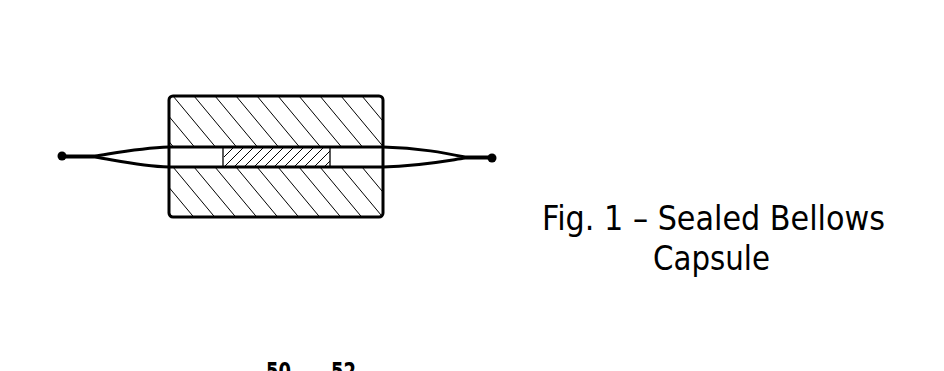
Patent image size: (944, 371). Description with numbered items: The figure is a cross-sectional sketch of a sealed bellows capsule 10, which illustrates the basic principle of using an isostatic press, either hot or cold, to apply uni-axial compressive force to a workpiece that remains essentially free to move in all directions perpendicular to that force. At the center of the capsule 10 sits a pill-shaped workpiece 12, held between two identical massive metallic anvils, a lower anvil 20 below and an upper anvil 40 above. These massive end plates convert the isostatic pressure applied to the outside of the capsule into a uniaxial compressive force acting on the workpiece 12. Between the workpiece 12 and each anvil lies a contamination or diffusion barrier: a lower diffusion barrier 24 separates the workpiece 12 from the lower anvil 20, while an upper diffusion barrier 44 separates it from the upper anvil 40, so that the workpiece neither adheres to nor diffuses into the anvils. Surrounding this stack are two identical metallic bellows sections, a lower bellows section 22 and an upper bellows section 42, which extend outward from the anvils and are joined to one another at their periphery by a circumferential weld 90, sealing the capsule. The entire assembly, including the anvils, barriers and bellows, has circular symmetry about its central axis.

The capsule 10 is at (142, 111).
The upper anvil 40 is at (205, 118).
The lower anvil 20 is at (195, 190).
The workpiece 12 is at (248, 147).
The upper diffusion barrier 44 is at (303, 147).
The lower diffusion barrier 24 is at (302, 168).
The upper bellows section 42 is at (403, 143).
The lower bellows section 22 is at (413, 170).
The circumferential weld 90 is at (492, 143).